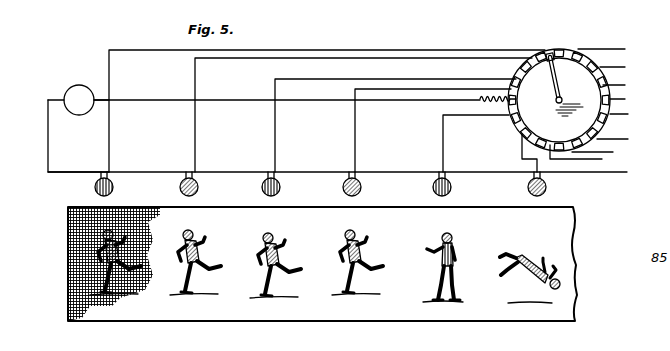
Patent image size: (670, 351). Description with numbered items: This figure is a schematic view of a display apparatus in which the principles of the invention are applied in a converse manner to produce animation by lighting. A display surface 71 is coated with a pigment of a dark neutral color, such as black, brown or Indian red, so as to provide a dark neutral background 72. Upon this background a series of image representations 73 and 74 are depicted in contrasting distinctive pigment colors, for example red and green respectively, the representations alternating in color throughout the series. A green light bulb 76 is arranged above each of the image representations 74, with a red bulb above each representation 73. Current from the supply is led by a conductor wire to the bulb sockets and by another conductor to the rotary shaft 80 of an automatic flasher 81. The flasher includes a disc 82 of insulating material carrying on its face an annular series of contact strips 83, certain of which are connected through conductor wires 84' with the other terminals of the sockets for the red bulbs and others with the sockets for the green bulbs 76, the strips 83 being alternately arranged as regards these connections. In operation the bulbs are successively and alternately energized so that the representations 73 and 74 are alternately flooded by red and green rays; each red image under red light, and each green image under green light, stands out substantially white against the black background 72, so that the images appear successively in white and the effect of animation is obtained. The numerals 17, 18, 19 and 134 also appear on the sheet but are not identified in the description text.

The generator 17 is at (79, 85).
The return conductor 18 is at (70, 170).
The conductor 19 is at (138, 100).
The green light bulb 76 is at (115, 187).
The conductor wires 84' is at (395, 115).
The rotary shaft 80 is at (562, 99).
The automatic flasher 81 is at (585, 97).
The disc of insulating material 82 is at (587, 110).
The contact strips 83 is at (608, 118).
The display surface 71 is at (558, 240).
The dark neutral background 72 is at (572, 257).
The image representations 73 is at (127, 252).
The image representations 74 is at (207, 250).
The film 134 is at (305, 341).